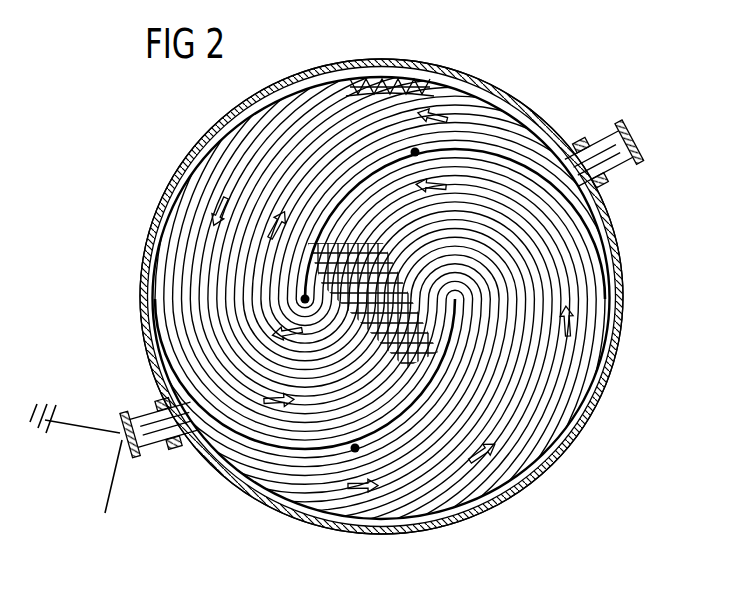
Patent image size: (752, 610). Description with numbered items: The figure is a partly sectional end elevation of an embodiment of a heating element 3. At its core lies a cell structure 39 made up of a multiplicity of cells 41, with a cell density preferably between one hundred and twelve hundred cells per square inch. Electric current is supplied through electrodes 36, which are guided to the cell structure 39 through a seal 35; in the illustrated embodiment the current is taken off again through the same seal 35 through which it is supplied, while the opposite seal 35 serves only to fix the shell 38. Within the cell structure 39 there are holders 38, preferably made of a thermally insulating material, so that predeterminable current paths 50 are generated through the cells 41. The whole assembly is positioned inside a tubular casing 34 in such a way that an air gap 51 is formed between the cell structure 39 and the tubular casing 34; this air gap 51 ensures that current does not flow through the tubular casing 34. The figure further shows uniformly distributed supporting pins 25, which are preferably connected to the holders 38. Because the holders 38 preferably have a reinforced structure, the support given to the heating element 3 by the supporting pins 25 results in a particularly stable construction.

The heating element 3 is at (664, 323).
The supporting pins 25 is at (353, 452).
The tubular casing 34 is at (600, 413).
The seal 35 is at (605, 127).
The electrodes 36 is at (77, 432).
The holders 38 is at (452, 74).
The cell structure 39 is at (391, 328).
The cells 41 is at (362, 82).
The current paths 50 is at (490, 466).
The air gap 51 is at (184, 187).